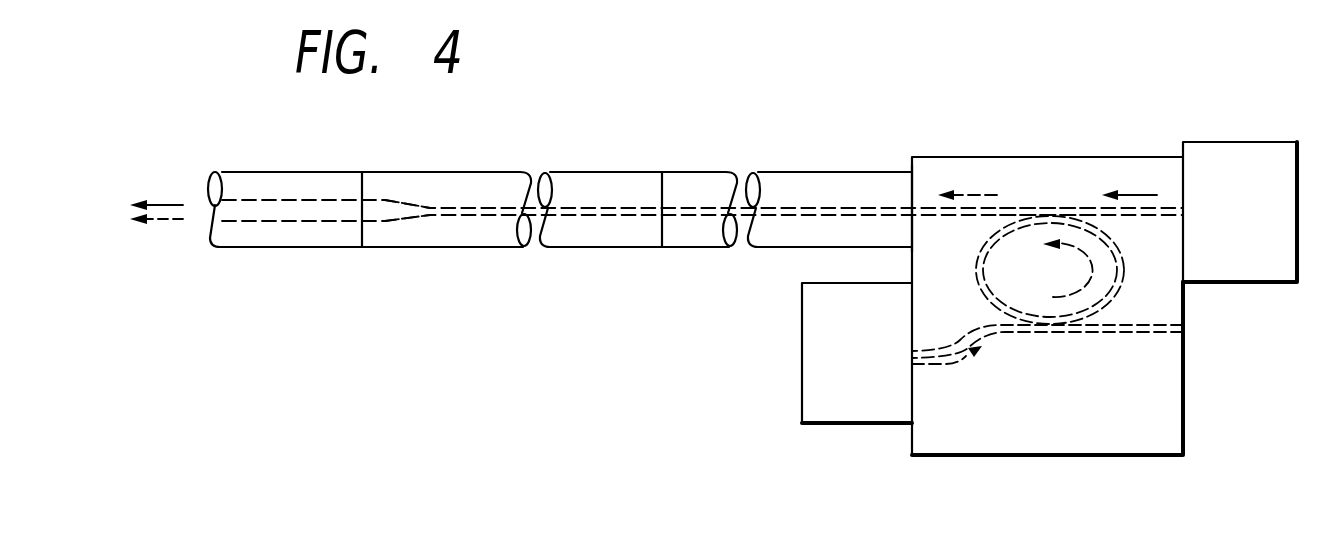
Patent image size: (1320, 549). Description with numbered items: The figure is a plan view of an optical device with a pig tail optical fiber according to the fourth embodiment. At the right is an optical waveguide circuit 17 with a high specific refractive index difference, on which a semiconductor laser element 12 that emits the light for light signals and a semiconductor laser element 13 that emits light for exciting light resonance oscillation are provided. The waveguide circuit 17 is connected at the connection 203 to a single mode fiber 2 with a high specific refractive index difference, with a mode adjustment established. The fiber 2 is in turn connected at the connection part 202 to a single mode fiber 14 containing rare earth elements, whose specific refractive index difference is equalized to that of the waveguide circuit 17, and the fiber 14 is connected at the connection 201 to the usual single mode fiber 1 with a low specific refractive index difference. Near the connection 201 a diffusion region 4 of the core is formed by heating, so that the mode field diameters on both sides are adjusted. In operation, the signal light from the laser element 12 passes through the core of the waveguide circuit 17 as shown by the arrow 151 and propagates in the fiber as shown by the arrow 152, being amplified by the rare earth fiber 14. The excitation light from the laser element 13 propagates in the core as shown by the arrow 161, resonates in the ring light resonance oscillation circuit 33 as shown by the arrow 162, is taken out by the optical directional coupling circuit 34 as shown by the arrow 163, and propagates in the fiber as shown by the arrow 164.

The usual single mode fiber 1 is at (273, 260).
The single mode fiber containing rare earth elements 14 is at (476, 259).
The connection 201 is at (362, 173).
The diffusion region 4 is at (448, 152).
The connection part 202 is at (663, 172).
The single mode fiber with a high specific refractive index difference 2 is at (790, 162).
The connection 203 is at (912, 178).
The optical waveguide circuit 17 is at (932, 157).
The semiconductor laser element 12 is at (1217, 150).
The semiconductor laser element 13 is at (820, 415).
The arrow 163 is at (974, 195).
The arrow 151 is at (1140, 195).
The optical directional coupling circuit 34 is at (1044, 215).
The arrow 162 is at (1085, 267).
The ring light resonance oscillation circuit 33 is at (1050, 340).
The arrow 161 is at (958, 358).
The arrow 152 is at (167, 204).
The arrow 164 is at (165, 222).